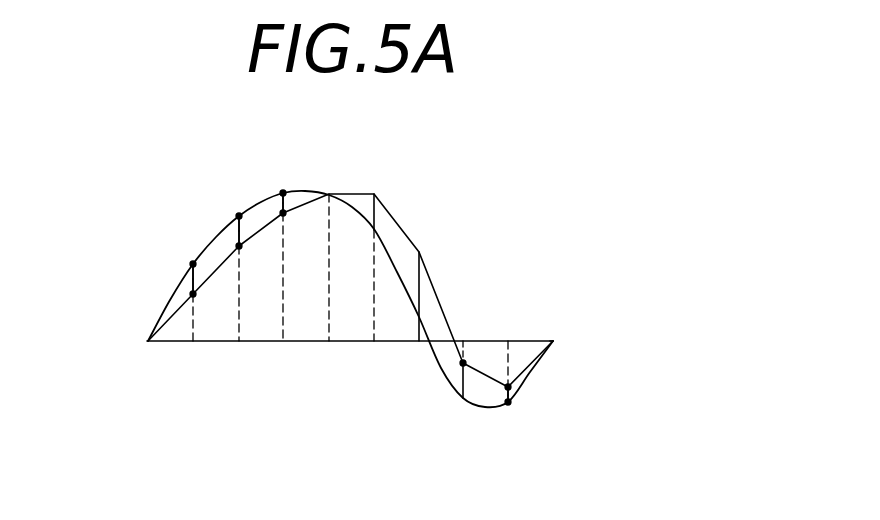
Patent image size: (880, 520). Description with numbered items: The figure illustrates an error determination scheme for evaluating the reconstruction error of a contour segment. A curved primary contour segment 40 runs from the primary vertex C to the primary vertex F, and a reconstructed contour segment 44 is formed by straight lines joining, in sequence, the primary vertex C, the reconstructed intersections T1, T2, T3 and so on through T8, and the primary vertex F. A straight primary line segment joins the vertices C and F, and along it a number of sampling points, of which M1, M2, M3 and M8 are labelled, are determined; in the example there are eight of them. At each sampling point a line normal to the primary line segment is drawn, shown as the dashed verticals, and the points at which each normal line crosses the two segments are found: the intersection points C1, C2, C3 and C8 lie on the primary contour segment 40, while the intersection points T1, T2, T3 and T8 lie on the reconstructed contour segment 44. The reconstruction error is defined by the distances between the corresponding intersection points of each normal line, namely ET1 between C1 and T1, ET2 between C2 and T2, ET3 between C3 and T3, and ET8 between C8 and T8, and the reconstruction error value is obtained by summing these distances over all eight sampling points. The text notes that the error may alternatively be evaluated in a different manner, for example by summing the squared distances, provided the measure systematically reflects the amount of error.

The primary contour segment 40 is at (300, 192).
The reconstructed contour segment 44 is at (398, 222).
The primary vertex C is at (337, 343).
The primary vertex F is at (565, 340).
The sampling point M1 is at (195, 335).
The sampling point M2 is at (240, 344).
The sampling point M3 is at (283, 344).
The sampling point M8 is at (505, 340).
The intersection point C1 is at (190, 264).
The intersection point C2 is at (236, 216).
The intersection point C3 is at (282, 192).
The intersection point C8 is at (508, 404).
The reconstructed intersection T1 is at (214, 298).
The reconstructed intersection T2 is at (258, 252).
The reconstructed intersection T3 is at (302, 223).
The reconstructed intersection T8 is at (510, 387).
The distance between intersection points ET1 is at (191, 290).
The distance between intersection points ET2 is at (237, 232).
The distance between intersection points ET3 is at (279, 194).
The distance between intersection points ET8 is at (511, 398).